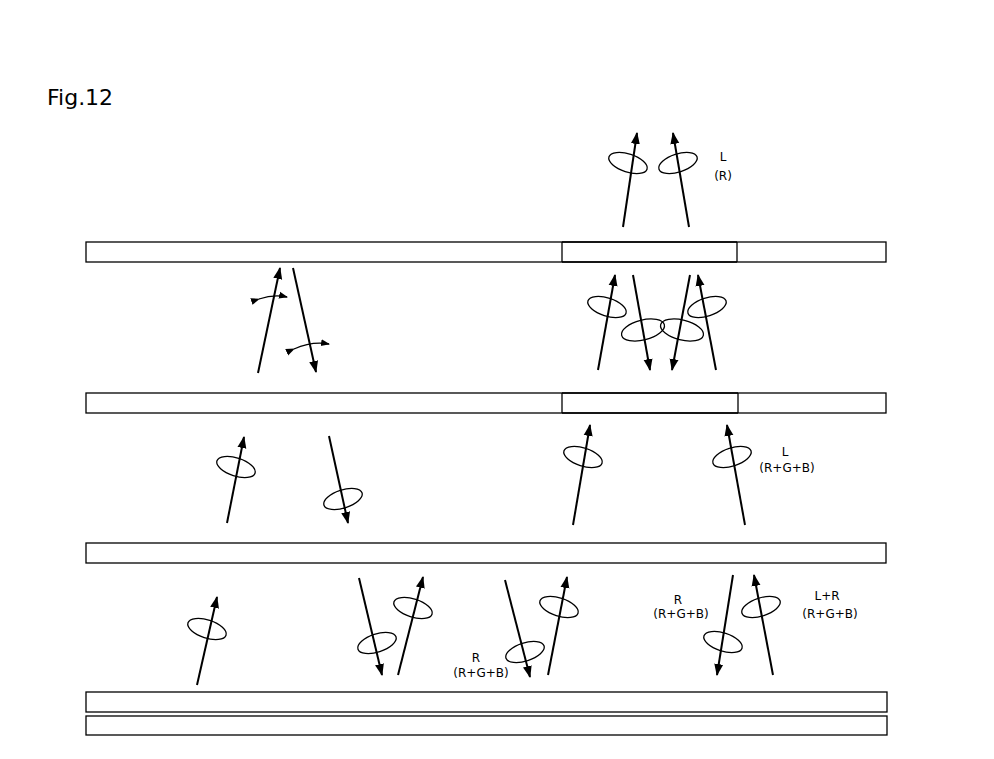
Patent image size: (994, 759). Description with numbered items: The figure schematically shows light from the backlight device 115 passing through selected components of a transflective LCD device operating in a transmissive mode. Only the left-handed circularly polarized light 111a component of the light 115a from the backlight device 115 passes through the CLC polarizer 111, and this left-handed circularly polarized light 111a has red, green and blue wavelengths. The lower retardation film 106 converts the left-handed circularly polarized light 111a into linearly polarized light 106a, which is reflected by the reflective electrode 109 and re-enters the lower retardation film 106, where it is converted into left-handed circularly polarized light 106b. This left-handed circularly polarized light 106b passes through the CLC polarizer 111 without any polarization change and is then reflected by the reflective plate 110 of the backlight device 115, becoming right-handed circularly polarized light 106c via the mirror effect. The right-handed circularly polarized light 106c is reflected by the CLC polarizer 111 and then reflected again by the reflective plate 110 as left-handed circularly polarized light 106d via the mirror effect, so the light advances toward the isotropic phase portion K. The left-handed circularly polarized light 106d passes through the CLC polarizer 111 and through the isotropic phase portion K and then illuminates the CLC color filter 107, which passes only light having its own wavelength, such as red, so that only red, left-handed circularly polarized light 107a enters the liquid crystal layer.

The reflective electrode 109 is at (86, 250).
The CLC color filter 107 is at (715, 247).
The red, left-handed circularly polarized light 107a is at (620, 206).
The lower retardation film 106 is at (87, 401).
The linearly polarized light 106a is at (266, 330).
The left-handed circularly polarized light 106b is at (345, 490).
The right-handed circularly polarized light 106c is at (433, 638).
The left-handed circularly polarized light 106d is at (604, 338).
The isotropic phase portion K is at (716, 404).
The CLC polarizer 111 is at (87, 552).
The left-handed circularly polarized light 111a is at (218, 465).
The reflective plate 110 is at (87, 700).
The backlight device 115 is at (87, 723).
The light from the backlight device 115a is at (200, 648).